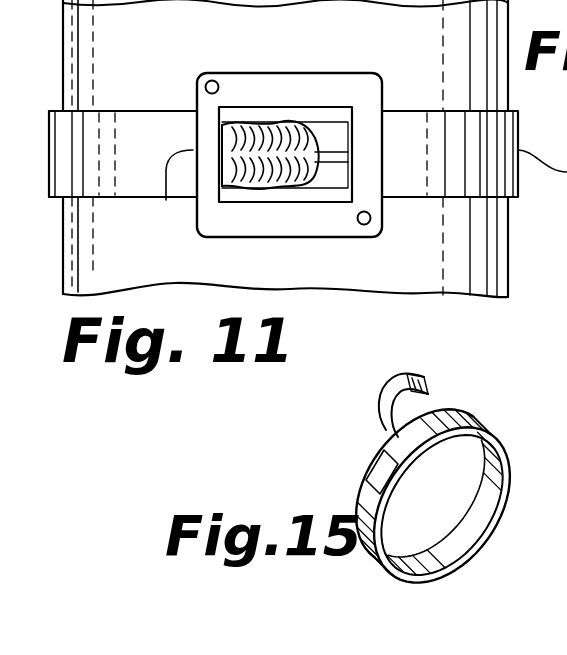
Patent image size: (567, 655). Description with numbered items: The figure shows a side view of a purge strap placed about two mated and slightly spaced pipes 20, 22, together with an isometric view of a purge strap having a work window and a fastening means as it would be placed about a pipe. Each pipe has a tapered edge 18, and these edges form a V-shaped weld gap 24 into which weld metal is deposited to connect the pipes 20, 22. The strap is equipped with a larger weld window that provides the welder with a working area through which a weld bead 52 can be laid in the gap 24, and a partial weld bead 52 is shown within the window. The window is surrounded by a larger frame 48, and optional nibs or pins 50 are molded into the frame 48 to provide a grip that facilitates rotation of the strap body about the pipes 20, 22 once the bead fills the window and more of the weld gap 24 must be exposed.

The tapered edge 18 is at (343, 137).
The pipe 20 is at (123, 76).
The pipe 22 is at (250, 185).
The weld gap 24 is at (357, 155).
The larger frame 48 is at (166, 200).
The nibs or pins 50 is at (211, 79).
The weld bead 52 is at (240, 122).